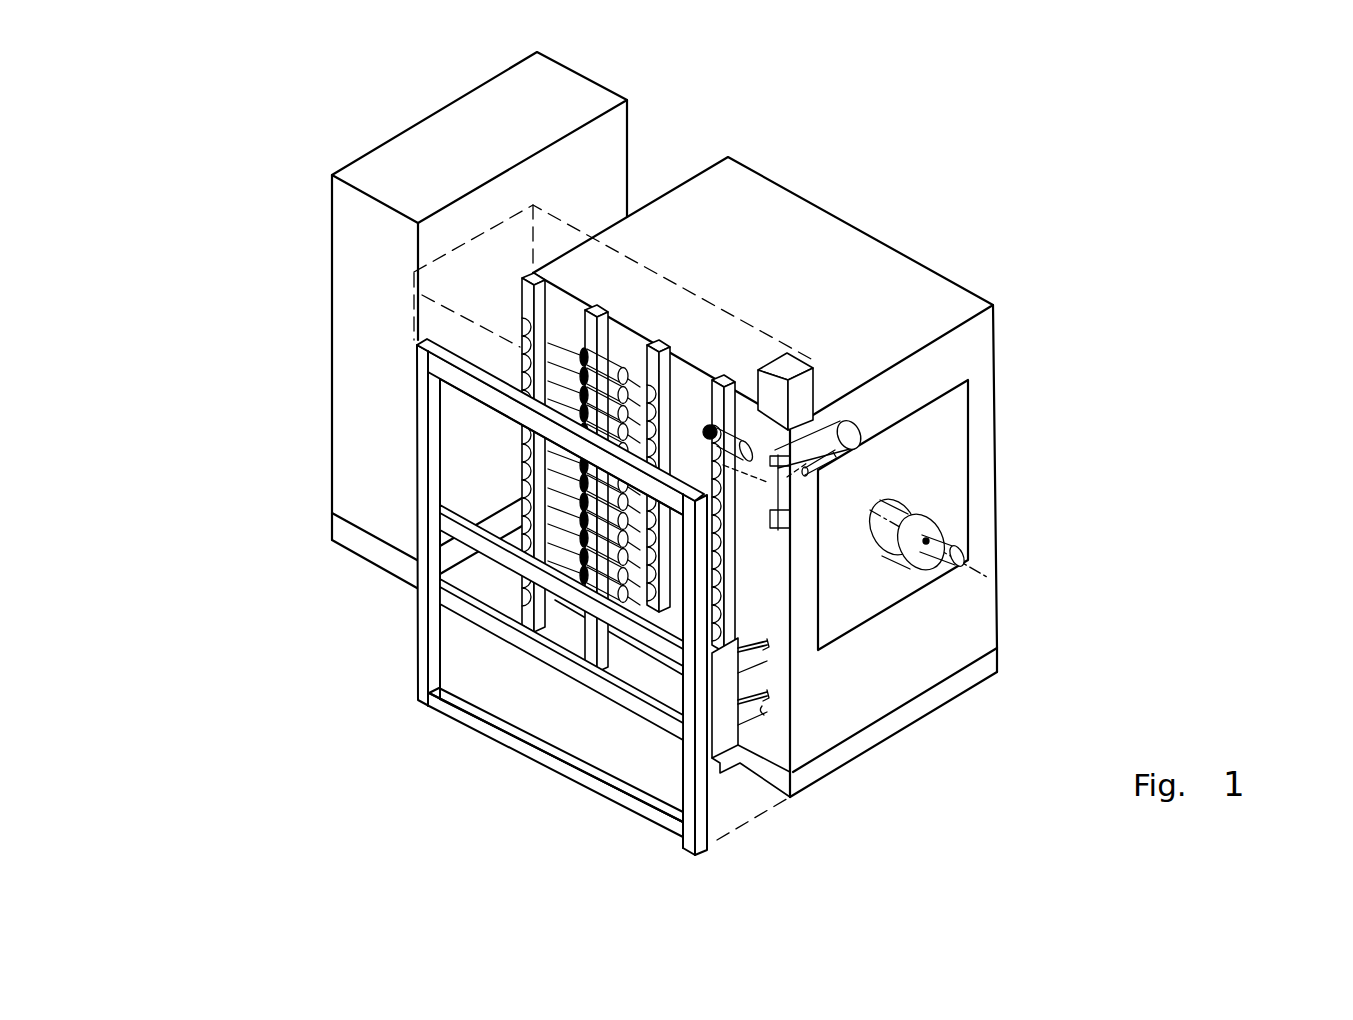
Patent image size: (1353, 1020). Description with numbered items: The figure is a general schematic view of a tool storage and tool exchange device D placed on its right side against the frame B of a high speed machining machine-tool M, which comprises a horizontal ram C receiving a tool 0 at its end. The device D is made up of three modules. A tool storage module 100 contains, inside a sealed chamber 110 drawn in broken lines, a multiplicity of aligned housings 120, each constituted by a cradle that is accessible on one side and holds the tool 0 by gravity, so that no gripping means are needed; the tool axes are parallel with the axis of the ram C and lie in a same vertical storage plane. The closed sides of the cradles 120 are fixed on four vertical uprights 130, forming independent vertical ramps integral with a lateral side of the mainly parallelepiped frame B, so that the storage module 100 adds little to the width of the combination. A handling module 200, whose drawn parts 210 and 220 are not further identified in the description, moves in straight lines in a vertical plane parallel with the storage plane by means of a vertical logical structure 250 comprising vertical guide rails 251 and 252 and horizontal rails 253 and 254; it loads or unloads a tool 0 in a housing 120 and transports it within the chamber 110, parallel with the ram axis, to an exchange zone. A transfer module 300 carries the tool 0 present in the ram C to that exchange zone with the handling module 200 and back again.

The frame B is at (332, 300).
The sealed chamber 110 is at (442, 258).
The machining machine-tool M is at (1037, 265).
The vertical uprights 130 is at (535, 275).
The tool storage module 100 is at (577, 320).
The housings 120 is at (735, 453).
The transfer module 300 is at (813, 445).
The horizontal ram C is at (913, 513).
The tool 0 is at (731, 437).
The vertical logical structure 250 is at (421, 604).
The tool storage and tool exchange device D is at (402, 765).
The vertical guide rail 251 is at (420, 455).
The vertical guide rail 252 is at (687, 672).
The horizontal rail 254 is at (458, 533).
The horizontal rail 253 is at (478, 623).
The handling module 200 is at (794, 754).
The upper guide rod 210 is at (762, 657).
The lower guide rod 220 is at (755, 710).